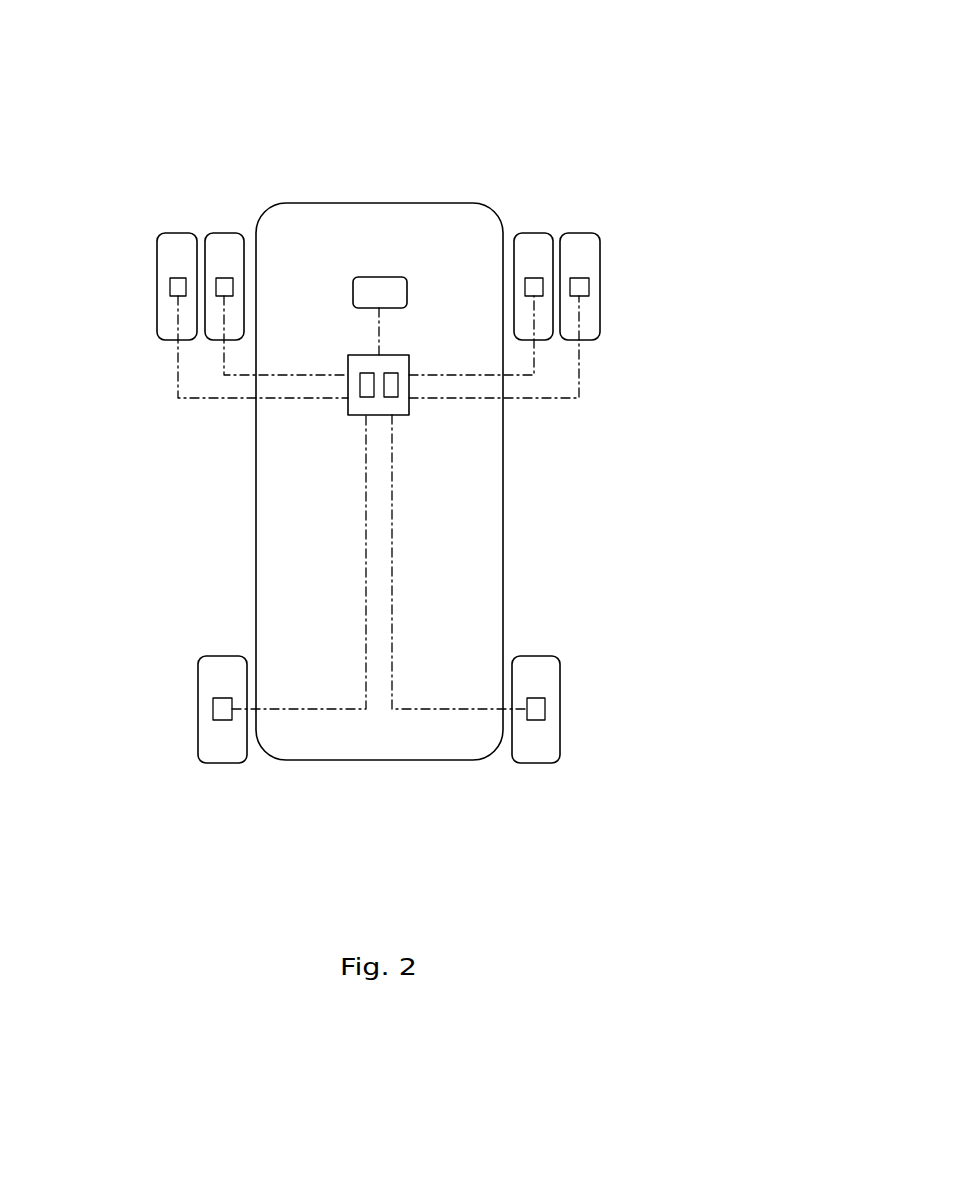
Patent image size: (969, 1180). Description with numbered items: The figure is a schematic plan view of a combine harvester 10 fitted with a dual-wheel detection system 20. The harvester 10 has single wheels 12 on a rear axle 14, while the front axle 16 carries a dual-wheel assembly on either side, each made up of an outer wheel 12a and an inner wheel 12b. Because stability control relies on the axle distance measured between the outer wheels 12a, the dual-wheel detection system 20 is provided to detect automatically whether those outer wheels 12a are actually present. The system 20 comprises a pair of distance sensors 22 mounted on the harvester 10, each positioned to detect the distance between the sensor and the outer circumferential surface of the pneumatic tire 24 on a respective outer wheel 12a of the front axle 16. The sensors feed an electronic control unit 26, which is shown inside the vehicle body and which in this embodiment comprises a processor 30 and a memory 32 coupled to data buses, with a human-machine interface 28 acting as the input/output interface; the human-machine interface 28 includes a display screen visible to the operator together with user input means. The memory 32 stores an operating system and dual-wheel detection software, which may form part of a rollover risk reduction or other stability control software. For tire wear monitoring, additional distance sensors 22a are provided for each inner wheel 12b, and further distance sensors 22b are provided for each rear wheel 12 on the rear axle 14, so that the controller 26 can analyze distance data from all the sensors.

The harvester 10 is at (668, 117).
The single wheels 12 is at (222, 763).
The outer wheel 12a is at (165, 340).
The inner wheel 12b is at (222, 233).
The rear axle 14 is at (560, 708).
The front axle 16 is at (600, 287).
The dual-wheel detection system 20 is at (640, 473).
The distance sensors 22 is at (178, 282).
The additional distance sensors 22a is at (224, 288).
The additional distance sensors 22b is at (215, 698).
The pneumatic tire 24 is at (158, 282).
The electronic control unit 26 is at (400, 352).
The human-machine interface 28 is at (383, 277).
The processor 30 is at (365, 387).
The memory 32 is at (392, 387).